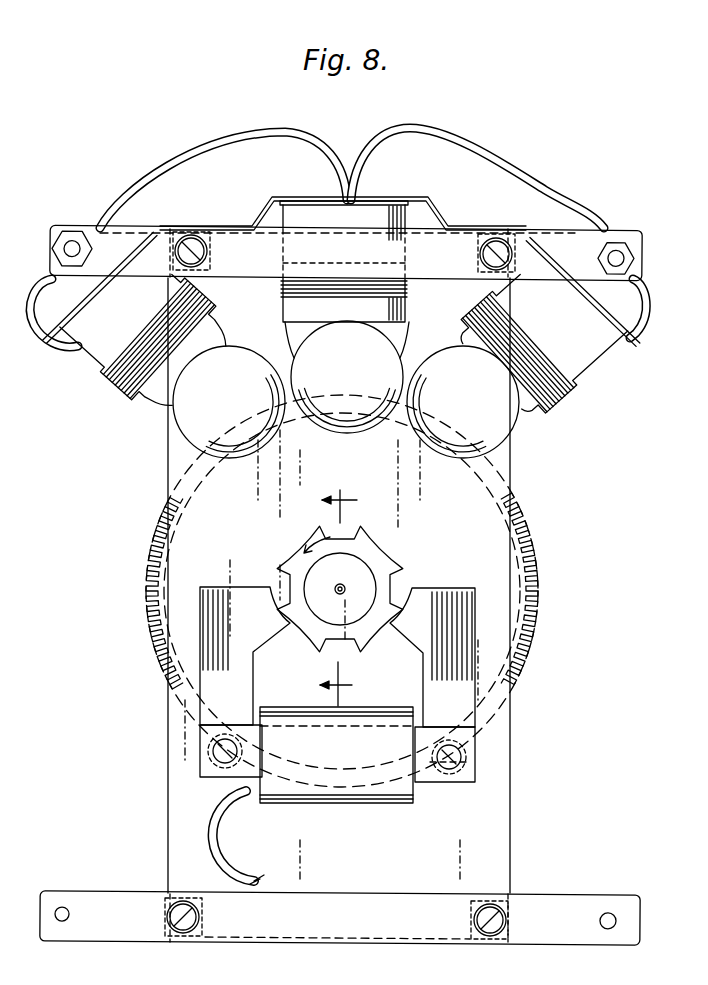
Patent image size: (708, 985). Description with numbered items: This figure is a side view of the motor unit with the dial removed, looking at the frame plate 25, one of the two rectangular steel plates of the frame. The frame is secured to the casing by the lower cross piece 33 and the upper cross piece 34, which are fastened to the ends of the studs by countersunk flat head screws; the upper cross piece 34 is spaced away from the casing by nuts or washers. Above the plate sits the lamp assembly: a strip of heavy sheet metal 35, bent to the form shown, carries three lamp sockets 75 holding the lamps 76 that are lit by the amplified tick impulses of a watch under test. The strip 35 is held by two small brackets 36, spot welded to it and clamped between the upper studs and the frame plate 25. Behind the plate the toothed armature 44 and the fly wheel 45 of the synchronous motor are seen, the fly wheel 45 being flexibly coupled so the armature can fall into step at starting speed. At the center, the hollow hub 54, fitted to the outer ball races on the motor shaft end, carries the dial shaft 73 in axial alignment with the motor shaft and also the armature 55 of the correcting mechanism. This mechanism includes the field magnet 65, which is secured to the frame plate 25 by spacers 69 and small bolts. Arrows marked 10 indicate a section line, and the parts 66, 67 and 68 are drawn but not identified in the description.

The section line 10 is at (348, 585).
The frame plate 25 is at (172, 843).
The lower cross piece 33 is at (551, 905).
The upper cross piece 34 is at (573, 243).
The strip of heavy sheet metal 35 is at (432, 203).
The small brackets 36 is at (199, 231).
The toothed armature 44 is at (532, 546).
The fly wheel 45 is at (520, 588).
The hollow hub 54 is at (365, 575).
The armature of the correcting mechanism 55 is at (373, 546).
The field magnet 65 is at (466, 703).
The roller 66 is at (392, 792).
The screw 67 is at (449, 771).
The screw 68 is at (223, 762).
The spacers 69 is at (466, 762).
The dial shaft 73 is at (336, 588).
The lamp socket 75 is at (97, 349).
The lamps 76 is at (233, 350).